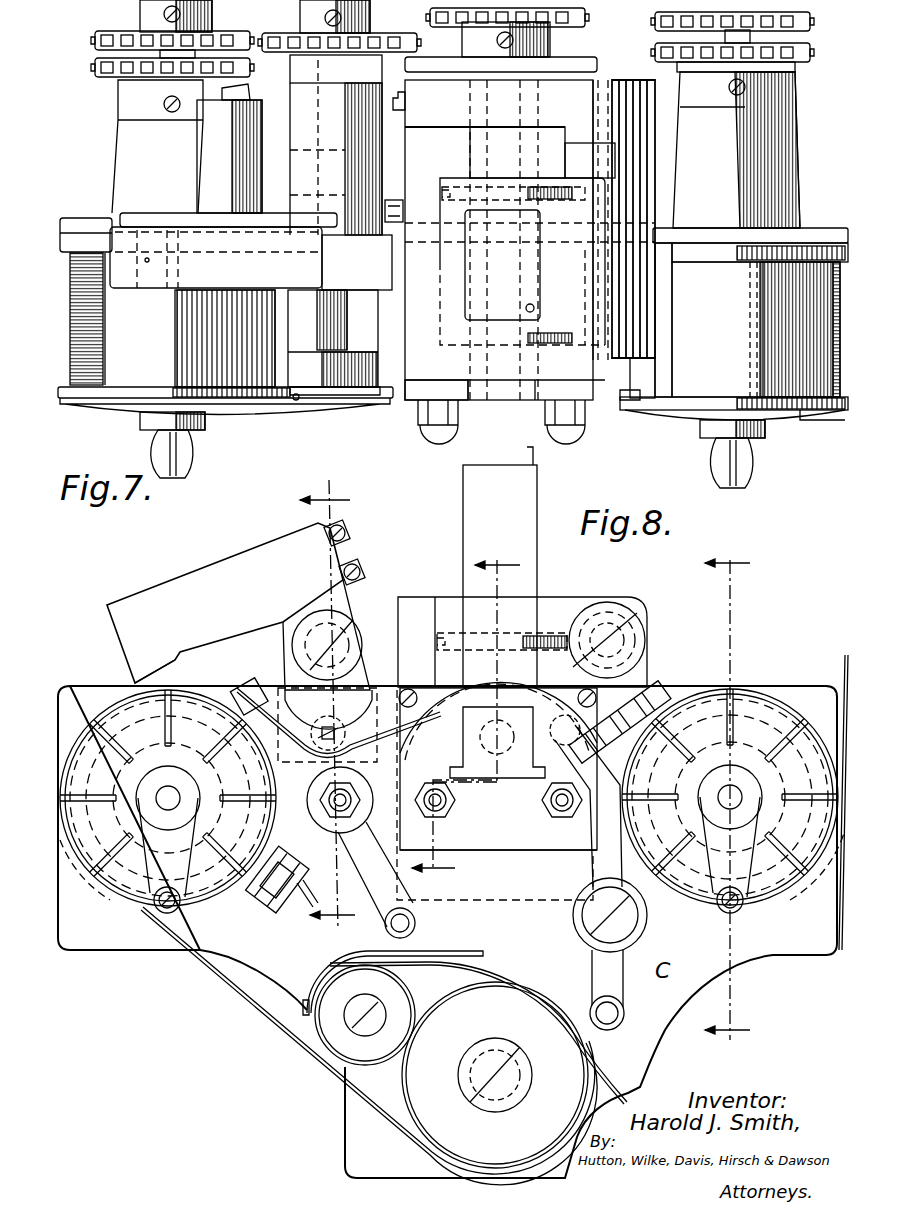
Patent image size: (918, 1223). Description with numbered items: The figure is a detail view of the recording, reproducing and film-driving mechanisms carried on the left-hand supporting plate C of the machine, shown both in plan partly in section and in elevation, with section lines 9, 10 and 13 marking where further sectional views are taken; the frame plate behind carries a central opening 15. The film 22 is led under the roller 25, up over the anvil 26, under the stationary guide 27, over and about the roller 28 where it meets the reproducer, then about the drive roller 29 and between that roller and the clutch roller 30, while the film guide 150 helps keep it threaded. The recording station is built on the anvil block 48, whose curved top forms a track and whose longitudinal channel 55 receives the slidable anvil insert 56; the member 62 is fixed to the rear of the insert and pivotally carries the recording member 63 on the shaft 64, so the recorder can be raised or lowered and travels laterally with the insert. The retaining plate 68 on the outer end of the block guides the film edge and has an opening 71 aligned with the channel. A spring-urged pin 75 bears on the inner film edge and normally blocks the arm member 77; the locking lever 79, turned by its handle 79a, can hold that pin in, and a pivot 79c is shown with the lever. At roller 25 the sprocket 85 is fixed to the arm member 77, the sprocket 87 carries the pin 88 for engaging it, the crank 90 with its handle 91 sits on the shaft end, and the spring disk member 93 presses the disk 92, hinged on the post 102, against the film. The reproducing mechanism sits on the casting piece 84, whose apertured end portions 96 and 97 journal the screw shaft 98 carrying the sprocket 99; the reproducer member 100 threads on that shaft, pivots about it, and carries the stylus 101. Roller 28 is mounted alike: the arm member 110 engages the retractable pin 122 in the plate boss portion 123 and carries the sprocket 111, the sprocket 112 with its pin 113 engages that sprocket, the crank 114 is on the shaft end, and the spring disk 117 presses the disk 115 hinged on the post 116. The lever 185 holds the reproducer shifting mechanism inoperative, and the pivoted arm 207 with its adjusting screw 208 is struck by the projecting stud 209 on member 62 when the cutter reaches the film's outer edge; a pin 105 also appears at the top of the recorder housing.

In FIG. 8, the section line 9— 9 is at (727, 803).
In FIG. 8, the section line 10— 10 is at (335, 705).
In FIG. 8, the section line 13— 13 is at (466, 714).
In FIG. 8, the central opening 15 is at (808, 690).
In FIG. 7, the film 22 is at (104, 335).
In FIG. 8, the film 22 is at (237, 990).
In FIG. 7, the roller 25 is at (750, 312).
In FIG. 8, the roller 25 is at (780, 897).
In FIG. 7, the anvil 26 is at (436, 380).
In FIG. 8, the anvil 26 is at (527, 827).
In FIG. 8, the stationary guide 27 is at (327, 725).
In FIG. 8, the roller 28 is at (85, 885).
In FIG. 8, the drive roller 29 is at (495, 1075).
In FIG. 8, the clutch roller 30 is at (330, 1025).
In FIG. 8, the anvil block 48 is at (547, 840).
In FIG. 8, the longitudinal channel 55 is at (470, 738).
In FIG. 7, the anvil insert 56 is at (505, 381).
In FIG. 8, the anvil insert 56 is at (487, 770).
In FIG. 7, the member 62 is at (530, 204).
In FIG. 7, the recording member 63 is at (519, 265).
In FIG. 8, the recording member 63 is at (520, 603).
In FIG. 7, the shaft 64 is at (650, 192).
In FIG. 7, the retaining plate 68 is at (505, 400).
In FIG. 8, the retaining plate 68 is at (498, 800).
In FIG. 8, the opening 71 is at (463, 757).
In FIG. 8, the pin 75 is at (490, 775).
In FIG. 7, the arm member 77 is at (785, 90).
In FIG. 8, the locking lever 79 is at (620, 955).
In FIG. 8, the handle 79a is at (625, 1010).
In FIG. 8, the pivot 79c is at (573, 693).
In FIG. 7, the casting piece 84 is at (365, 312).
In FIG. 7, the sprocket 85 is at (812, 52).
In FIG. 7, the sprocket 87 is at (815, 22).
In FIG. 7, the pin 88 is at (725, 37).
In FIG. 7, the crank 90 is at (750, 438).
In FIG. 8, the crank 90 is at (737, 870).
In FIG. 7, the handle 91 is at (750, 475).
In FIG. 7, the disk 92 is at (822, 413).
In FIG. 7, the spring disk member 93 is at (690, 415).
In FIG. 8, the spring disk member 93 is at (730, 797).
In FIG. 7, the apertured end portion 96 is at (340, 398).
In FIG. 7, the apertured end portion 97 is at (308, 68).
In FIG. 7, the screw shaft 98 is at (345, 300).
In FIG. 7, the sprocket 99 is at (370, 35).
In FIG. 7, the reproducer member 100 is at (226, 251).
In FIG. 8, the reproducer member 100 is at (245, 575).
In FIG. 8, the stylus 101 is at (135, 682).
In FIG. 7, the post 102 is at (653, 365).
In FIG. 8, the post 102 is at (647, 688).
In FIG. 8, the pin 105 is at (533, 460).
In FIG. 7, the arm member 110 is at (127, 105).
In FIG. 7, the sprocket 111 is at (112, 72).
In FIG. 7, the sprocket 112 is at (200, 52).
In FIG. 7, the pin 113 is at (205, 38).
In FIG. 7, the crank 114 is at (190, 432).
In FIG. 8, the crank 114 is at (175, 862).
In FIG. 7, the disk 115 is at (268, 405).
In FIG. 7, the post 116 is at (275, 318).
In FIG. 8, the post 116 is at (278, 900).
In FIG. 7, the spring disk 117 is at (258, 405).
In FIG. 8, the spring disk 117 is at (168, 798).
In FIG. 7, the retractable pin 122 is at (228, 98).
In FIG. 7, the plate boss portion 123 is at (215, 165).
In FIG. 8, the film guide 150 is at (333, 958).
In FIG. 8, the lever 185 is at (327, 845).
In FIG. 7, the pivoted arm 207 is at (395, 205).
In FIG. 7, the adjusting screw 208 is at (400, 245).
In FIG. 7, the projecting stud 209 is at (400, 100).